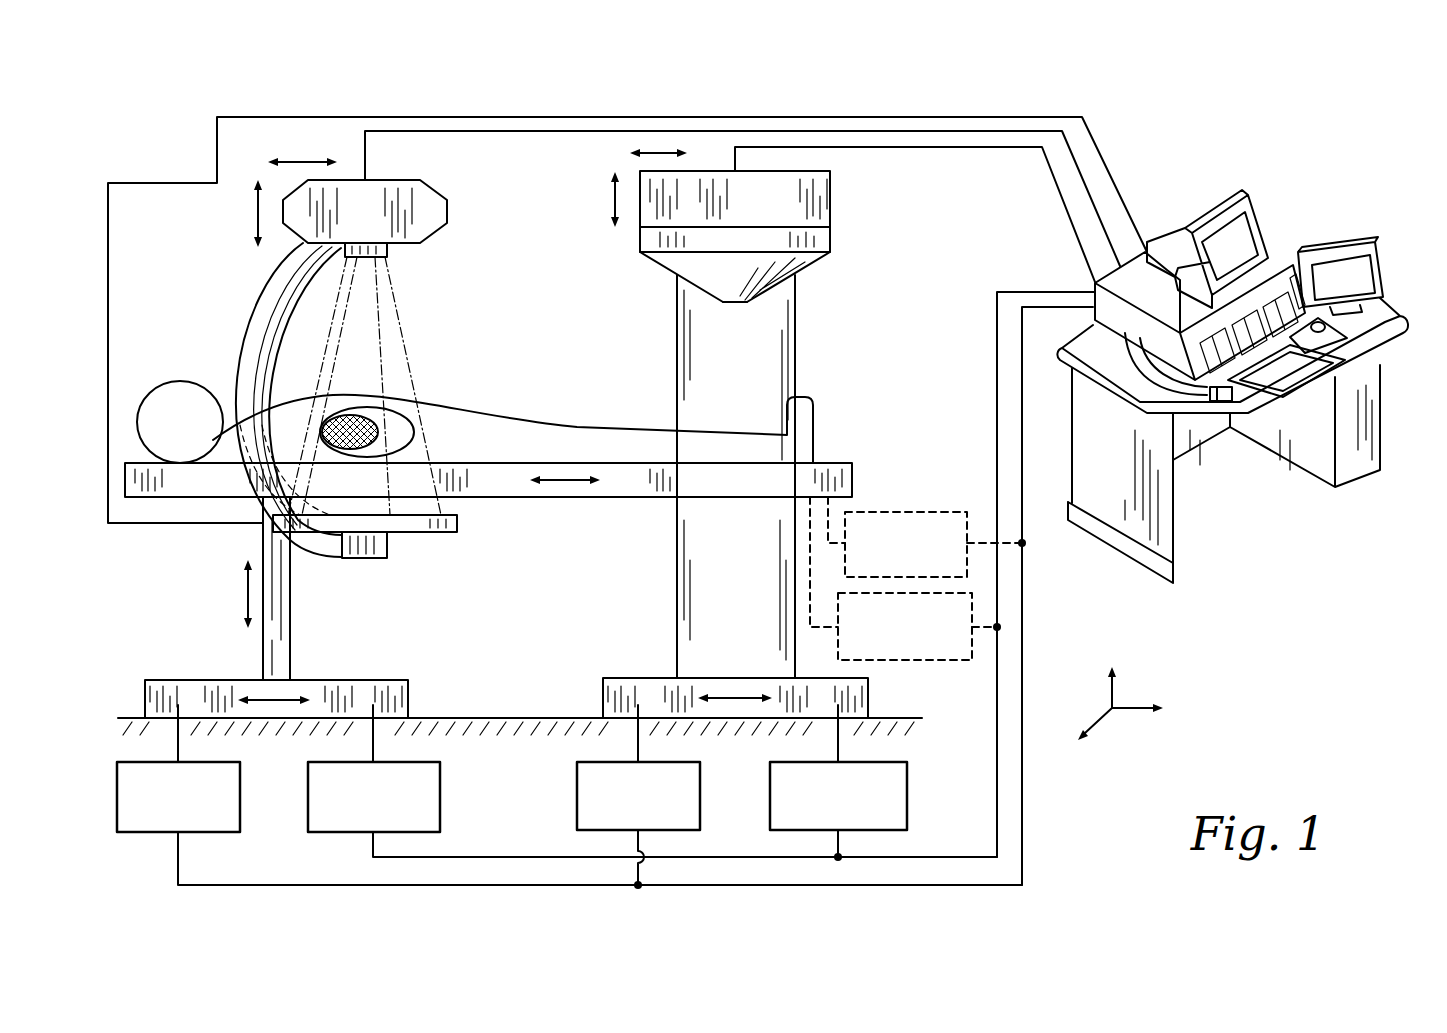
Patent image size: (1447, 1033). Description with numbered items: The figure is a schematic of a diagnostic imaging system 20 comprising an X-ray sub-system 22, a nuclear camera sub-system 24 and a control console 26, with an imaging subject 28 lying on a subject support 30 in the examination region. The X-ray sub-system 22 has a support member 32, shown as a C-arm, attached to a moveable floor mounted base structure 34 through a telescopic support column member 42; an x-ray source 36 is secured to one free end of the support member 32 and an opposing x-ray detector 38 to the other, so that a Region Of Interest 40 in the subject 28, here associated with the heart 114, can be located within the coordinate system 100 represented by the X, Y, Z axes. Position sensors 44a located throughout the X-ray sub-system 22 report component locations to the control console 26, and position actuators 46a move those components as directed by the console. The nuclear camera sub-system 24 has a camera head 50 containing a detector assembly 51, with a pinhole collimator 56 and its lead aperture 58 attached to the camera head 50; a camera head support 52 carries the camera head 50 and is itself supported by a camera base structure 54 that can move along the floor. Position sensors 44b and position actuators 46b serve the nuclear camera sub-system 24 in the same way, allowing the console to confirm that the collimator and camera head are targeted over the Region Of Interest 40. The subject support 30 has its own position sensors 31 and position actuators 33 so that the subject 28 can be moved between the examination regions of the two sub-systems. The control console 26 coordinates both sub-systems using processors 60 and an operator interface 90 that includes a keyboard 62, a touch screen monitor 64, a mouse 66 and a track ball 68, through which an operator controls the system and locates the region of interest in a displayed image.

The diagnostic imaging system 20 is at (187, 135).
The X-ray sub-system 22 is at (402, 100).
The nuclear camera sub-system 24 is at (778, 98).
The control console 26 is at (1357, 168).
The imaging subject 28 is at (805, 428).
The subject support 30 is at (852, 478).
The position sensors 31 is at (940, 512).
The support member 32 is at (250, 310).
The position actuators 33 is at (912, 660).
The base structure 34 is at (185, 695).
The x-ray source 36 is at (440, 212).
The x-ray detector 38 is at (457, 527).
The Region Of Interest 40 is at (380, 410).
The telescopic support column member 42 is at (282, 608).
The position sensors 44a is at (240, 795).
The position sensors 44b is at (700, 797).
The position actuators 46a is at (440, 795).
The position actuators 46b is at (907, 797).
The camera head 50 is at (827, 198).
The detector assembly 51 is at (640, 242).
The camera head support 52 is at (793, 342).
The camera base structure 54 is at (643, 690).
The pinhole collimator 56 is at (795, 275).
The aperture 58 is at (737, 305).
The processors 60 is at (1105, 338).
The keyboard 62 is at (1292, 370).
The touch screen monitor 64 is at (1237, 245).
The mouse 66 is at (1238, 405).
The track ball 68 is at (1330, 325).
The operator interface 90 is at (1132, 393).
The coordinate system 100 is at (1160, 675).
The heart 114 is at (407, 430).